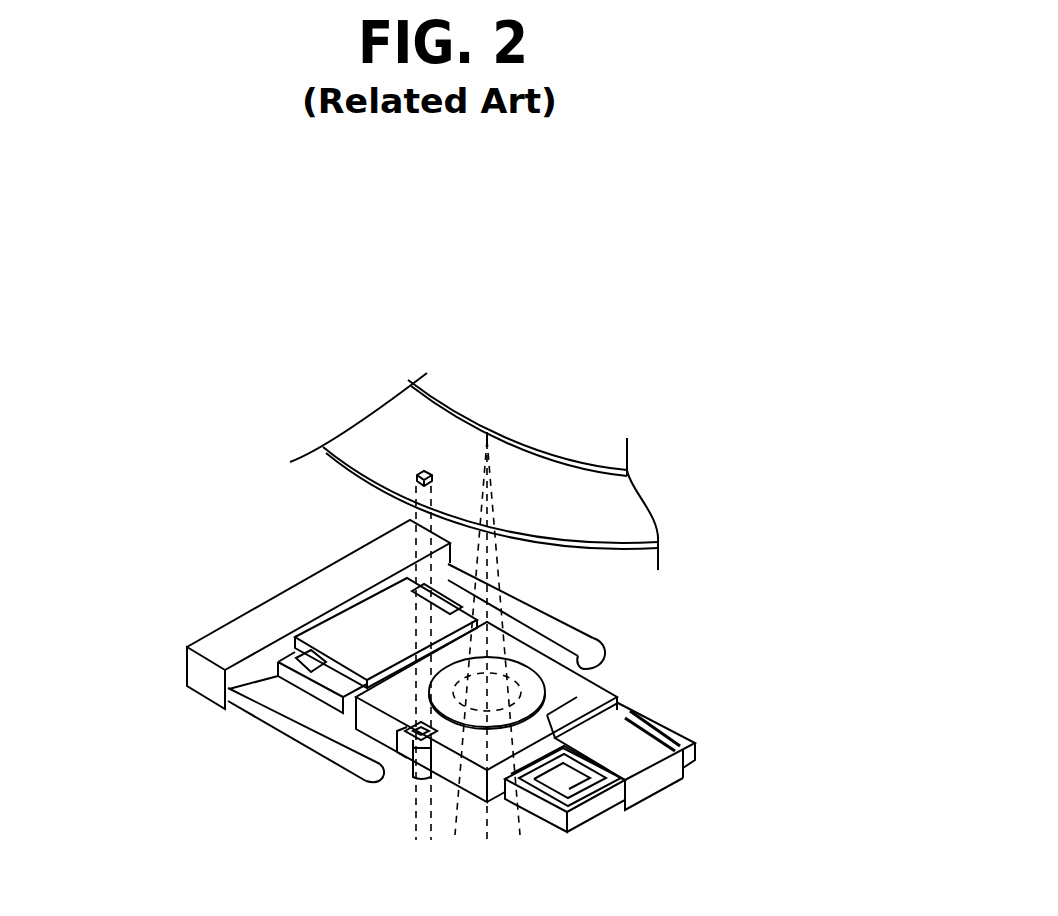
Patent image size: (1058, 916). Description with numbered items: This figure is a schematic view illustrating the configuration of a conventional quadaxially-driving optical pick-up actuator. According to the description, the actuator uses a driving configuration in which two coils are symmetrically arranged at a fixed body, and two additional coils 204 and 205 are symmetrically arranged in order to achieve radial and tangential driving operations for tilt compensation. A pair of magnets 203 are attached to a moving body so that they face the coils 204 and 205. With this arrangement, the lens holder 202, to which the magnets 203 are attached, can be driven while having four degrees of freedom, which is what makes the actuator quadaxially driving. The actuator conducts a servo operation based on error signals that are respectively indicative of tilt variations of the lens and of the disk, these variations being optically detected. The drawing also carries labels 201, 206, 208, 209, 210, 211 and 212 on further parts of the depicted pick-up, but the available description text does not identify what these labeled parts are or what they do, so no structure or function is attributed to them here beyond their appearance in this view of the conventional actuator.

The optical disc 201 is at (613, 688).
The lens holder 202 is at (527, 680).
The magnets 203 is at (473, 758).
The coil 204 is at (545, 793).
The coil 205 is at (587, 800).
The coil 206 is at (547, 788).
The printed circuit board 208 is at (648, 794).
The connector 209 is at (663, 718).
The reflecting mirror 210 is at (413, 787).
The guide shaft 211 is at (290, 725).
The guide shaft holder 212 is at (223, 630).